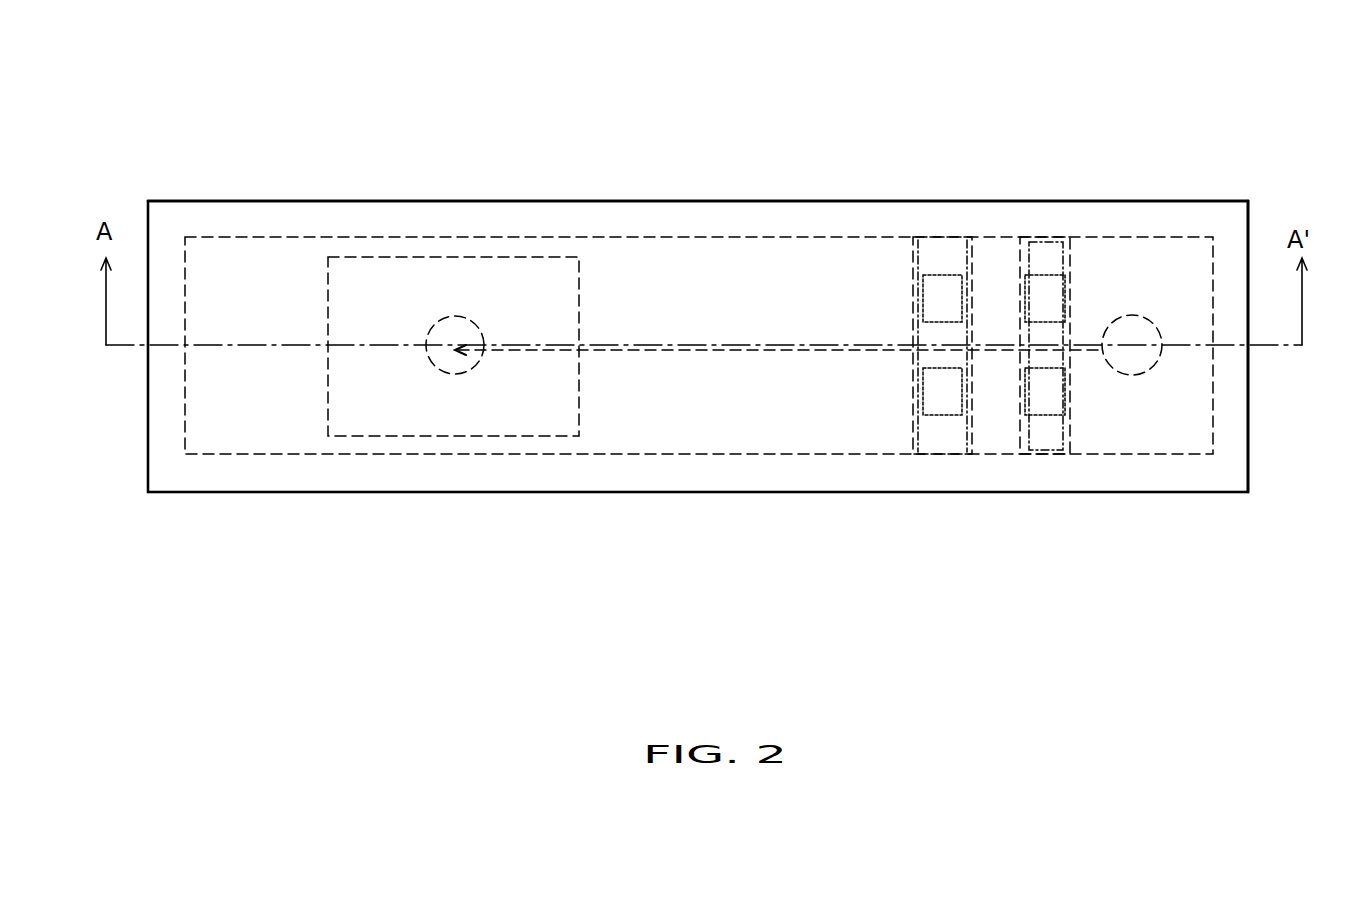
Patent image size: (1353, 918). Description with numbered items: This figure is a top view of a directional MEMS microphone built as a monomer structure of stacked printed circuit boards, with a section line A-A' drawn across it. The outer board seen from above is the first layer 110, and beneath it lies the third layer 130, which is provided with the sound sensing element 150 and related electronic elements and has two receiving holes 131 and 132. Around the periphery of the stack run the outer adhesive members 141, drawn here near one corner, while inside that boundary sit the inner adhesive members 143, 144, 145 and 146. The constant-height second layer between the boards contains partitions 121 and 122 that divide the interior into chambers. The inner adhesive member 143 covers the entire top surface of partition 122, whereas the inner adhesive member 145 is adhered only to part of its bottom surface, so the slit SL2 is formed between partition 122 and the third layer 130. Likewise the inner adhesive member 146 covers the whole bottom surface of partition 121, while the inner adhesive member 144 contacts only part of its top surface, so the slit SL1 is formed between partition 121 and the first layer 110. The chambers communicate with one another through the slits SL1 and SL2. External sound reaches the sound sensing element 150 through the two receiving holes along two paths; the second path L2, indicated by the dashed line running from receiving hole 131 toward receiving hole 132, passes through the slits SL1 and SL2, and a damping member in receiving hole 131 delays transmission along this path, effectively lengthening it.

The first layer 110 is at (737, 218).
The third layer 130 is at (628, 222).
The sound sensing element 150 is at (453, 282).
The receiving hole 132 is at (462, 370).
The receiving hole 131 is at (1136, 366).
The outer adhesive member 141 is at (1178, 208).
The inner adhesive member 143 is at (930, 253).
The inner adhesive member 144 is at (1047, 382).
The inner adhesive member 145 is at (935, 298).
The inner adhesive member 146 is at (1042, 437).
The partition 121 is at (1067, 440).
The partition 122 is at (912, 402).
The slit SL1 is at (1070, 424).
The slit SL2 is at (969, 442).
The second path L2 is at (773, 352).